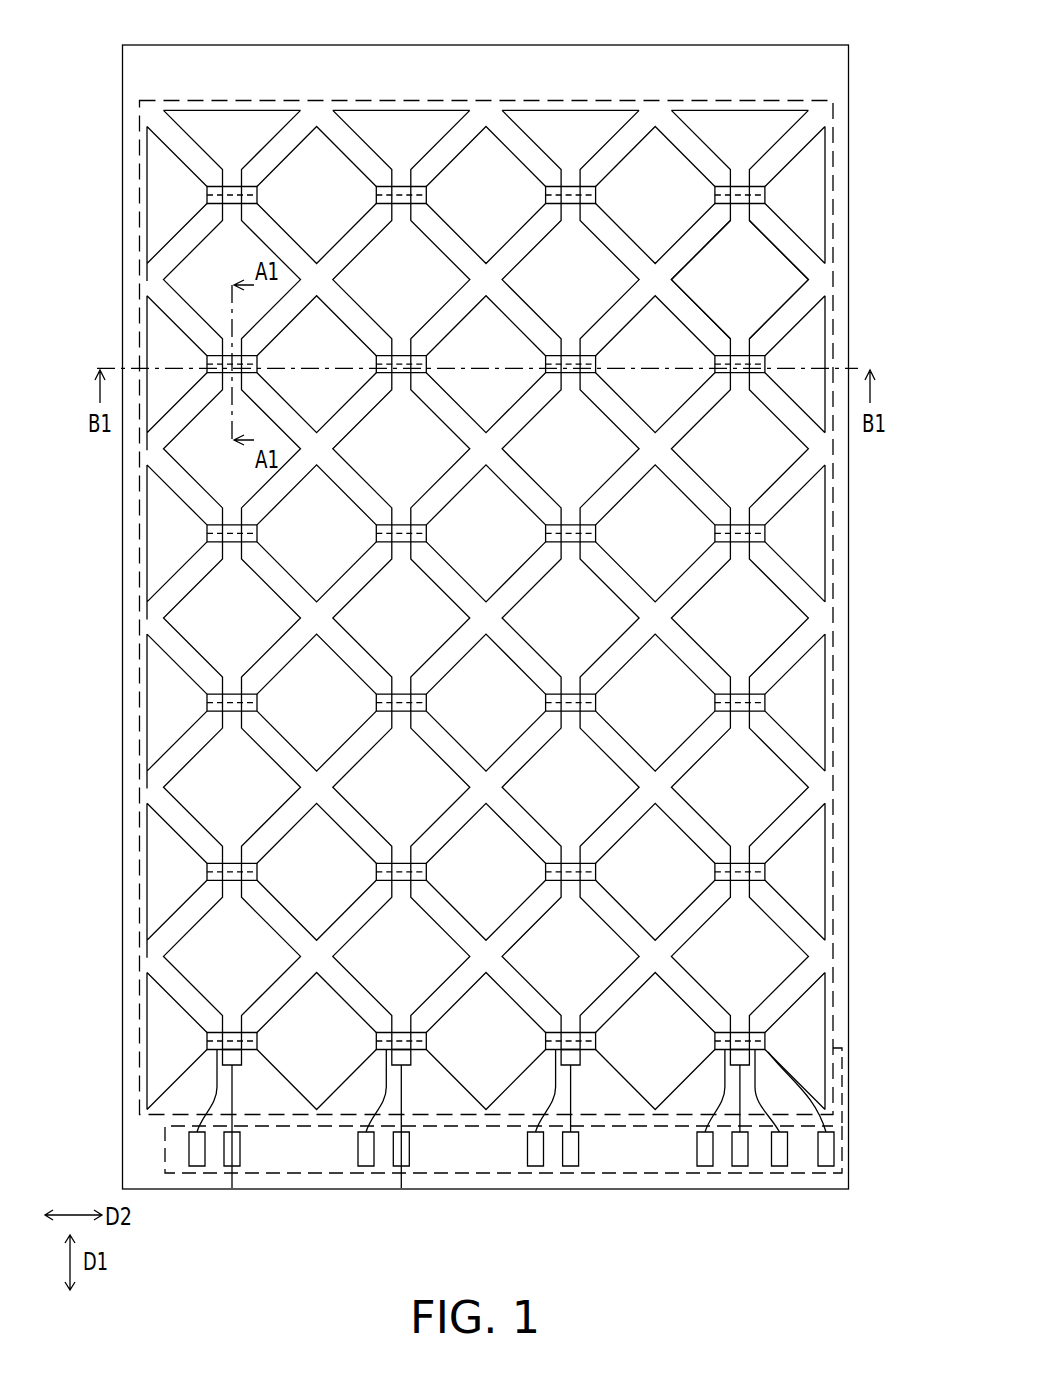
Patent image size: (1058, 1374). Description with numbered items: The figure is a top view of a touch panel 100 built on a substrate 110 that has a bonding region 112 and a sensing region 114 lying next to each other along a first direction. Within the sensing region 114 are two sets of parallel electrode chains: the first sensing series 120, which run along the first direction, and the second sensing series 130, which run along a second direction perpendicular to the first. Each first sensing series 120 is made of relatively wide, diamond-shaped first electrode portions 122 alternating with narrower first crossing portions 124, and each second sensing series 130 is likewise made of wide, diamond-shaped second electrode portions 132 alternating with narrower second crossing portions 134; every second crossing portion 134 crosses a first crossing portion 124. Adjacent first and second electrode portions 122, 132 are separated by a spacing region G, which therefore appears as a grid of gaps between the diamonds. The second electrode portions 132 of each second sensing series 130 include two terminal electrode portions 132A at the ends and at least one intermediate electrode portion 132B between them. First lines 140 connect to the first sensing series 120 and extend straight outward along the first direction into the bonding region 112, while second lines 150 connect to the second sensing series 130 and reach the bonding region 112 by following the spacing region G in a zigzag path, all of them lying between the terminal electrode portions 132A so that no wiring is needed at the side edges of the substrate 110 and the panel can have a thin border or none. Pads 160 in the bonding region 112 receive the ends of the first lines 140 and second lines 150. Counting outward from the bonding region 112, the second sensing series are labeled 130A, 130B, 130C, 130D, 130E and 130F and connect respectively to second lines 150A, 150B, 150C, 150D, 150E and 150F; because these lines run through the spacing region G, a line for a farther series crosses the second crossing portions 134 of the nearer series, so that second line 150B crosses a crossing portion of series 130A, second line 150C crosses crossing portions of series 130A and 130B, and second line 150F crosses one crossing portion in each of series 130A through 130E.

The touch panel 100 is at (902, 1311).
The substrate 110 is at (835, 60).
The bonding region 112 is at (732, 1196).
The sensing region 114 is at (843, 1048).
The first sensing series 120 is at (747, 92).
The first electrode portion 122 is at (790, 258).
The first crossing portion 124 is at (748, 347).
The second sensing series 130 is at (485, 558).
The first second sensing series 130A is at (133, 1046).
The second second sensing series 130B is at (133, 877).
The third second sensing series 130C is at (133, 708).
The fourth second sensing series 130D is at (133, 538).
The fifth second sensing series 130E is at (485, 351).
The sixth second sensing series 130F is at (441, 143).
The second electrode portion 132 is at (290, 185).
The terminal electrode portion 132A is at (193, 206).
The intermediate electrode portion 132B is at (333, 206).
The second crossing portion 134 is at (243, 190).
The first line 140 is at (235, 1090).
The second line 150 is at (533, 694).
The second line connected to first second sensing series 150A is at (840, 1117).
The second line connected to second second sensing series 150B is at (766, 1060).
The second line connected to third second sensing series 150C is at (776, 694).
The second line connected to fourth second sensing series 150D is at (556, 1065).
The second line connected to fifth second sensing series 150E is at (386, 1065).
The second line connected to sixth second sensing series 150F is at (217, 1065).
The pad 160 is at (232, 1188).
The spacing region G is at (713, 645).